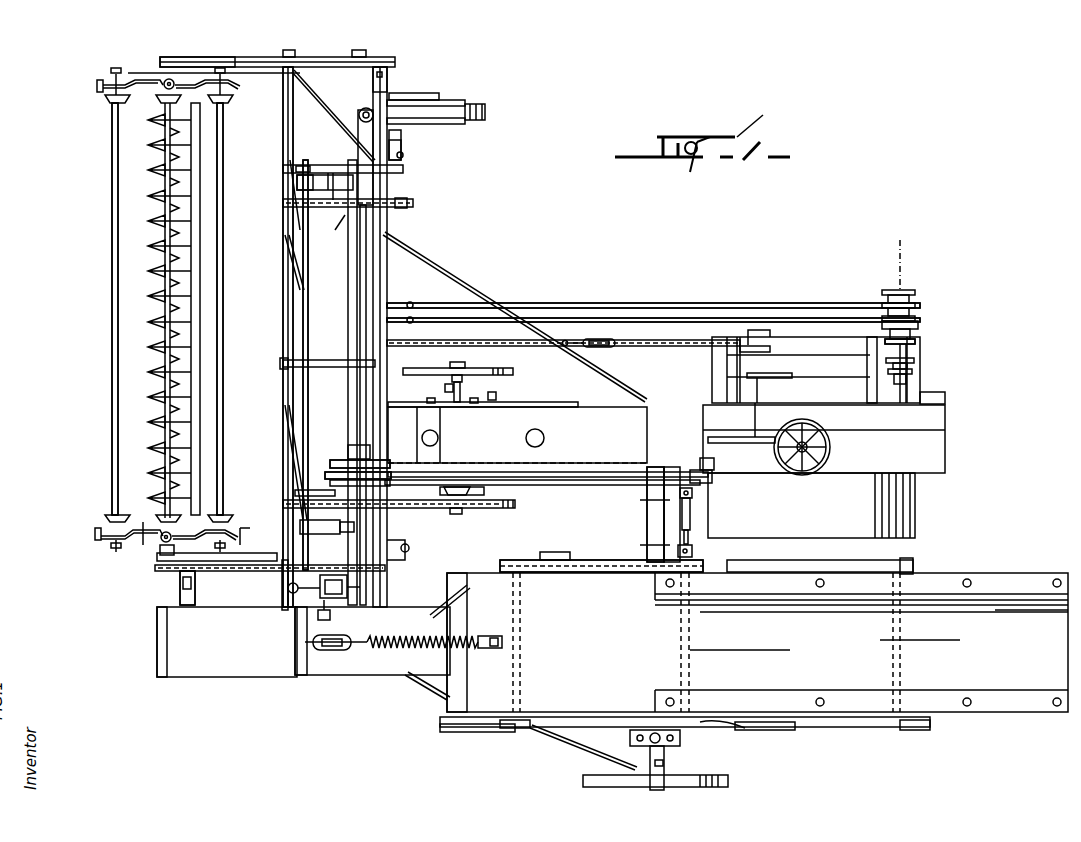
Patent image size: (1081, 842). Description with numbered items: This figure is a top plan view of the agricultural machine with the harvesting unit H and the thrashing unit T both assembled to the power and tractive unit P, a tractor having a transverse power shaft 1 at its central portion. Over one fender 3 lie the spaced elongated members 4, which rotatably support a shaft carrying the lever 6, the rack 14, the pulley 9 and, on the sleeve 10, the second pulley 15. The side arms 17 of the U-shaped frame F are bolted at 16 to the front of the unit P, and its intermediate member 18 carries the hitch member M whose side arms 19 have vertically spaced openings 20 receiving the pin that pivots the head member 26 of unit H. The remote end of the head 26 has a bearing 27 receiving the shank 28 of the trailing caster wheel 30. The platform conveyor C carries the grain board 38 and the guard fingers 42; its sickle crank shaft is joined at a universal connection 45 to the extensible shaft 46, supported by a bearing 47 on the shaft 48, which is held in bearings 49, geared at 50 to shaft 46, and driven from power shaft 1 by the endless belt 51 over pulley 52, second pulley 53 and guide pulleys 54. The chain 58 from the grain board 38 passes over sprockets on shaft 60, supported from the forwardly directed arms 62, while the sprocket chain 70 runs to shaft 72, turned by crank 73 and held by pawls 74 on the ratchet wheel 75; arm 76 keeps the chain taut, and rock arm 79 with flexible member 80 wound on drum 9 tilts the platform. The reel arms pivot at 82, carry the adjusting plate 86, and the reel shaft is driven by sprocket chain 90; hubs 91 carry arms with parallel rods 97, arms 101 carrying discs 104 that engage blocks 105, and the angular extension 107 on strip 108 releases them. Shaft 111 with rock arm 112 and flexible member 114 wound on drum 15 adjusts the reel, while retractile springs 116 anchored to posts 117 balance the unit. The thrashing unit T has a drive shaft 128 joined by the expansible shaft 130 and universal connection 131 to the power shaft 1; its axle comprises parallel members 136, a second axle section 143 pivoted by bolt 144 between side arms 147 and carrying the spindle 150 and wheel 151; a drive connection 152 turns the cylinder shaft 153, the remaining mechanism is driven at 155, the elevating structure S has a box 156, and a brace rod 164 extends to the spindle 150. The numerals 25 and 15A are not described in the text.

The power shaft 1 is at (684, 447).
The fender 3 is at (832, 355).
The elongated members 4 is at (108, 478).
The lever 6 is at (912, 372).
The pulley 9 is at (912, 288).
The elongated sleeve 10 is at (908, 333).
The rack 14 is at (915, 360).
The second pulley 15 is at (908, 325).
The bolt 16 is at (480, 393).
The side arms 17 is at (408, 404).
The intermediate member 18 is at (283, 205).
The side arms 19 is at (283, 170).
The vertically spaced openings 20 is at (100, 132).
The bracket block 25 is at (362, 445).
The bar or head member 26 is at (356, 268).
The bearing 27 is at (360, 108).
The shank 28 is at (366, 108).
The caster wheel 30 is at (485, 105).
The grain board 38 is at (253, 384).
The guard fingers 42 is at (150, 292).
The universal connection 45 is at (283, 608).
The shaft 46 is at (272, 575).
The bearing 47 is at (325, 618).
The shaft 48 is at (283, 505).
The bearings 49 is at (330, 476).
The gears 50 is at (362, 586).
The endless belt 51 is at (585, 478).
The pulley 52 is at (712, 470).
The second pulley 53 is at (335, 465).
The guide pulley 54 is at (470, 495).
The flexible member or chain 58 is at (340, 215).
The shaft 60 is at (300, 288).
The forwardly directed arms 62 is at (330, 183).
The sprocket chain 70 is at (652, 333).
The shaft 72 is at (750, 353).
The crank 73 is at (775, 330).
The pawls 74 is at (812, 388).
The ratchet wheel 75 is at (750, 410).
The arm 76 is at (318, 360).
The rock arm 79 is at (428, 287).
The flexible member 80 is at (570, 302).
The pivotal connection 82 is at (292, 50).
The elongated plate 86 is at (203, 57).
The sprocket chain 90 is at (212, 575).
The hubs 91 is at (138, 530).
The parallel rods 97 is at (112, 320).
The arm 101 is at (155, 548).
The circular head or disc 104 is at (97, 86).
The outstanding block 105 is at (104, 100).
The angular extension 107 is at (330, 480).
The strip 108 is at (258, 57).
The shaft 111 is at (390, 282).
The rock arm 112 is at (425, 324).
The flexible member 114 is at (650, 318).
The retractile spring 116 is at (403, 155).
The post 117 is at (402, 135).
The drive shaft 128 is at (692, 552).
The shaft 130 is at (690, 518).
The universal connection 131 is at (692, 493).
The parallel members 136 is at (647, 520).
The second axle section 143 is at (648, 752).
The pivot bolt 144 is at (180, 580).
The side arms 147 is at (668, 755).
The spindle 150 is at (665, 770).
The ground engaging and supporting wheel 151 is at (728, 782).
The drive connection 152 is at (590, 572).
The cylinder shaft 153 is at (565, 548).
The drive 155 is at (738, 722).
The box 156 is at (205, 682).
The brace rod 164 is at (600, 752).
The rail plate 15A is at (490, 727).
The platform conveyor C is at (240, 245).
The U-shaped frame F is at (455, 398).
The harvesting unit H is at (160, 50).
The hitch member M is at (350, 462).
The power and tractive unit P is at (615, 420).
The elevating structure S is at (355, 668).
The thrashing unit T is at (985, 718).